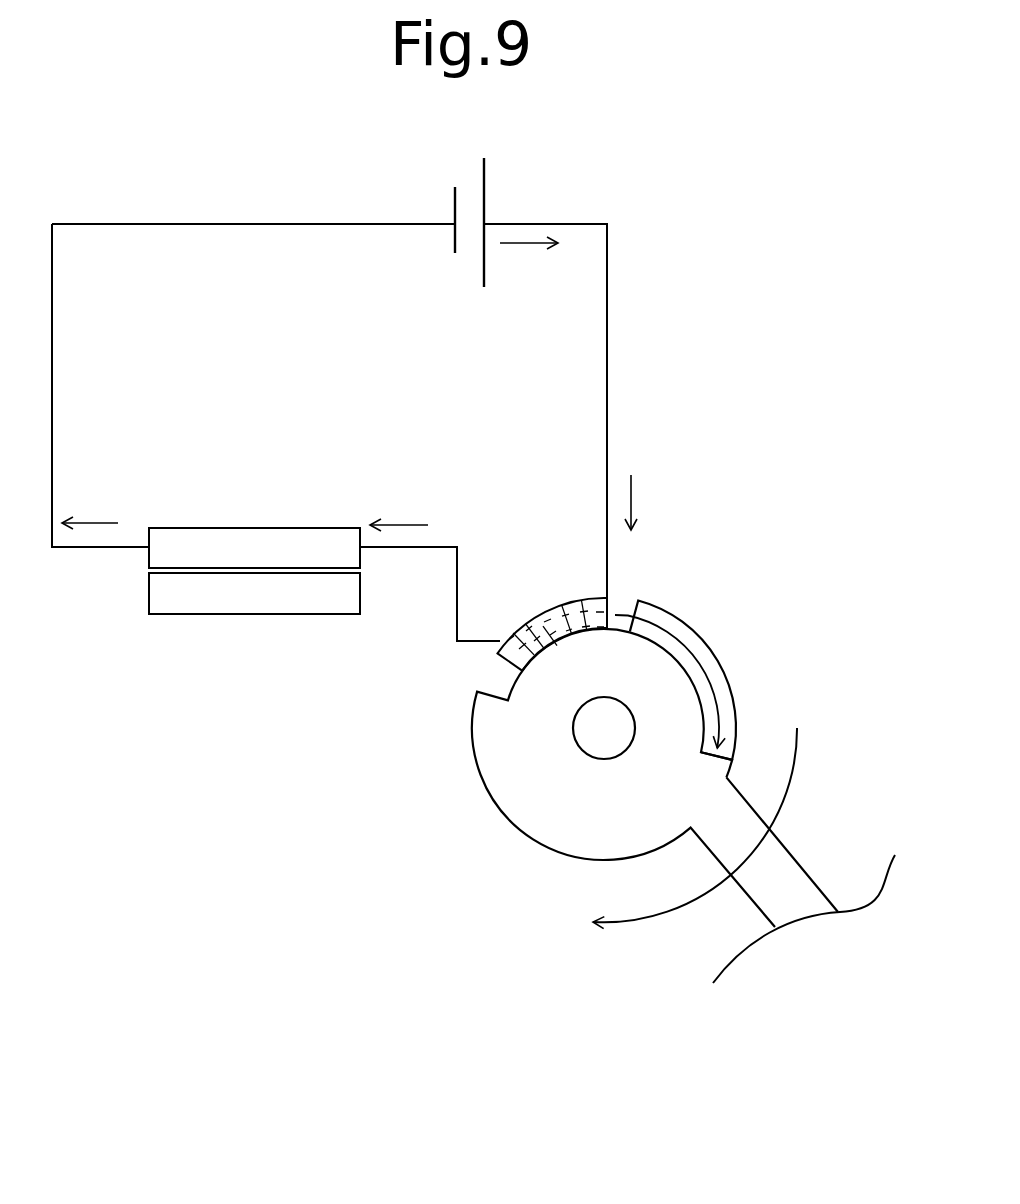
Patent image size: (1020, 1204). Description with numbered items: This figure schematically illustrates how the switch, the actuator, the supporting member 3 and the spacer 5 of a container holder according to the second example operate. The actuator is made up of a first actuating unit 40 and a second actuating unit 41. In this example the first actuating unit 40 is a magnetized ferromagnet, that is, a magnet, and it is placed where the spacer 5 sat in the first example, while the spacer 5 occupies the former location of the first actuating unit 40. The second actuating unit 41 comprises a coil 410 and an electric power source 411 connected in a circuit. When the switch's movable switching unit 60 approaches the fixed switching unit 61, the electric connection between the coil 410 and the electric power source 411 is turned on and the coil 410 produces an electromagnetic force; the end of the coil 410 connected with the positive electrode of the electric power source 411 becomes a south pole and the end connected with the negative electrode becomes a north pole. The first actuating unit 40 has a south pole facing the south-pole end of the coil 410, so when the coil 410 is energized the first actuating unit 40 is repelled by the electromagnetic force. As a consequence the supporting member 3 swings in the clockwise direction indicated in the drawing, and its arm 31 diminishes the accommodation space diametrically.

The supporting member 3 is at (807, 703).
The spacer 5 is at (492, 742).
The arm 31 is at (810, 863).
The first actuating unit 40 is at (727, 663).
The second actuating unit 41 is at (632, 328).
The movable switching unit 60 is at (238, 603).
The fixed switching unit 61 is at (235, 537).
The coil 410 is at (538, 605).
The electric power source 411 is at (487, 183).